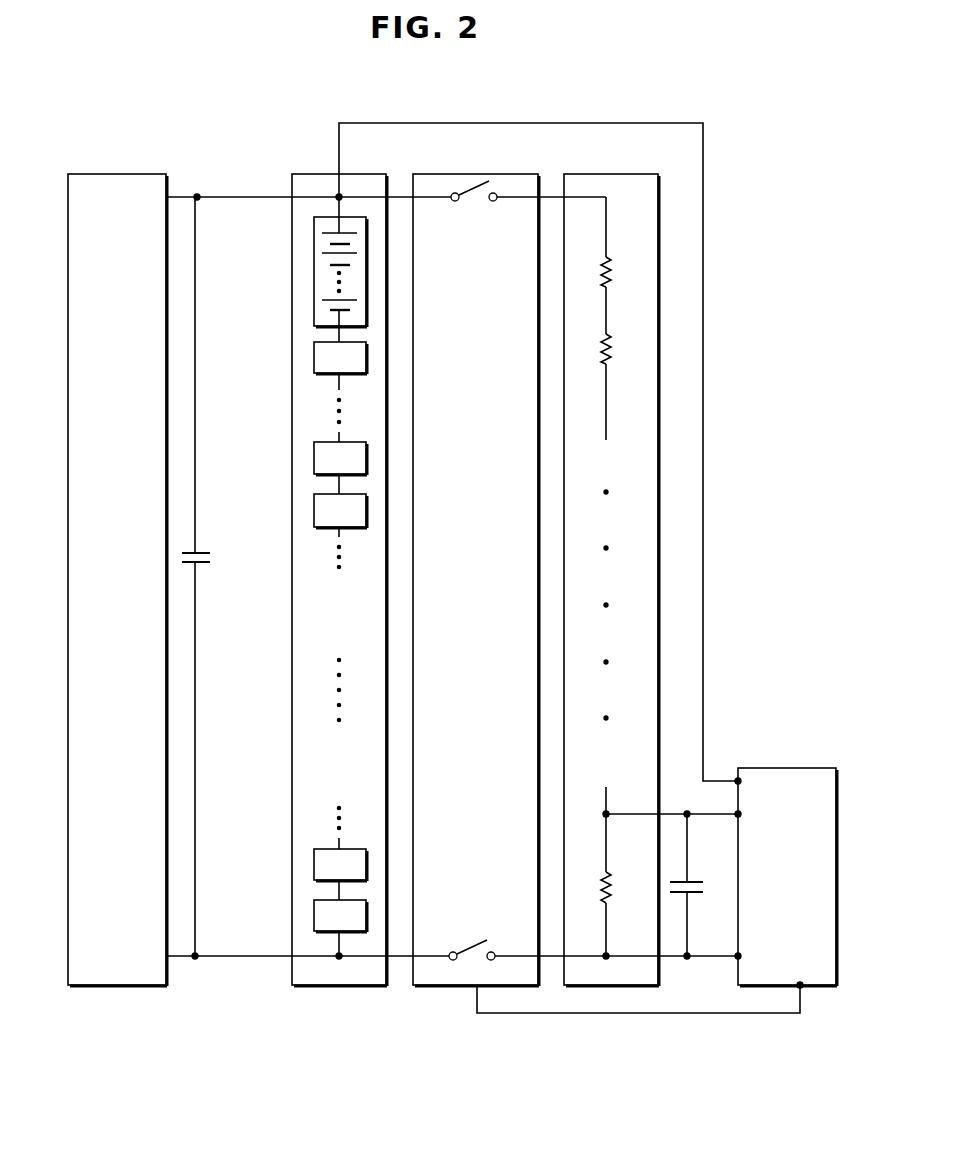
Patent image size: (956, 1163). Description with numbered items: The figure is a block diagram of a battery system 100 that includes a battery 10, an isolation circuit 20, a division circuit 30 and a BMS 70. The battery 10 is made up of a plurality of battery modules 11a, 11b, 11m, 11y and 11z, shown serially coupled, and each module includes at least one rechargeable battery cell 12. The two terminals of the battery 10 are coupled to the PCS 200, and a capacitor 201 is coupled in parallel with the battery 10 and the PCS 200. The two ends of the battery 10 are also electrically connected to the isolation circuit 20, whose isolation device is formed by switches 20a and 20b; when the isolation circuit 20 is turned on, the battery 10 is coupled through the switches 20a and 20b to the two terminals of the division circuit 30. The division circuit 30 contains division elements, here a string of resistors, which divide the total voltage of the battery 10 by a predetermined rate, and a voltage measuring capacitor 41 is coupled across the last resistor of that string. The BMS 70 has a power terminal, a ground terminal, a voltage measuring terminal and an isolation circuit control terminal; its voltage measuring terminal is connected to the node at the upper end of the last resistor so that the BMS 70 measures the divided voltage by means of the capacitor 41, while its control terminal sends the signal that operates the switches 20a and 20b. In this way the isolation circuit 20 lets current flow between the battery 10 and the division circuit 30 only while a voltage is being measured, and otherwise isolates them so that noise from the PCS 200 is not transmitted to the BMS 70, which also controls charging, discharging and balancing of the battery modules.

The PCS 200 is at (117, 172).
The capacitor 201 is at (207, 568).
The battery system 100 is at (525, 603).
The battery 10 is at (362, 173).
The battery module 11a is at (301, 272).
The battery module 11b is at (314, 357).
The battery module 11m is at (314, 509).
The battery module 11y is at (314, 863).
The battery module 11z is at (314, 915).
The battery cell 12 is at (330, 300).
The isolation circuit 20 is at (472, 173).
The switch 20a is at (471, 193).
The switch 20b is at (476, 940).
The division circuit 30 is at (632, 173).
The capacitor 41 is at (695, 880).
The BMS 70 is at (795, 768).